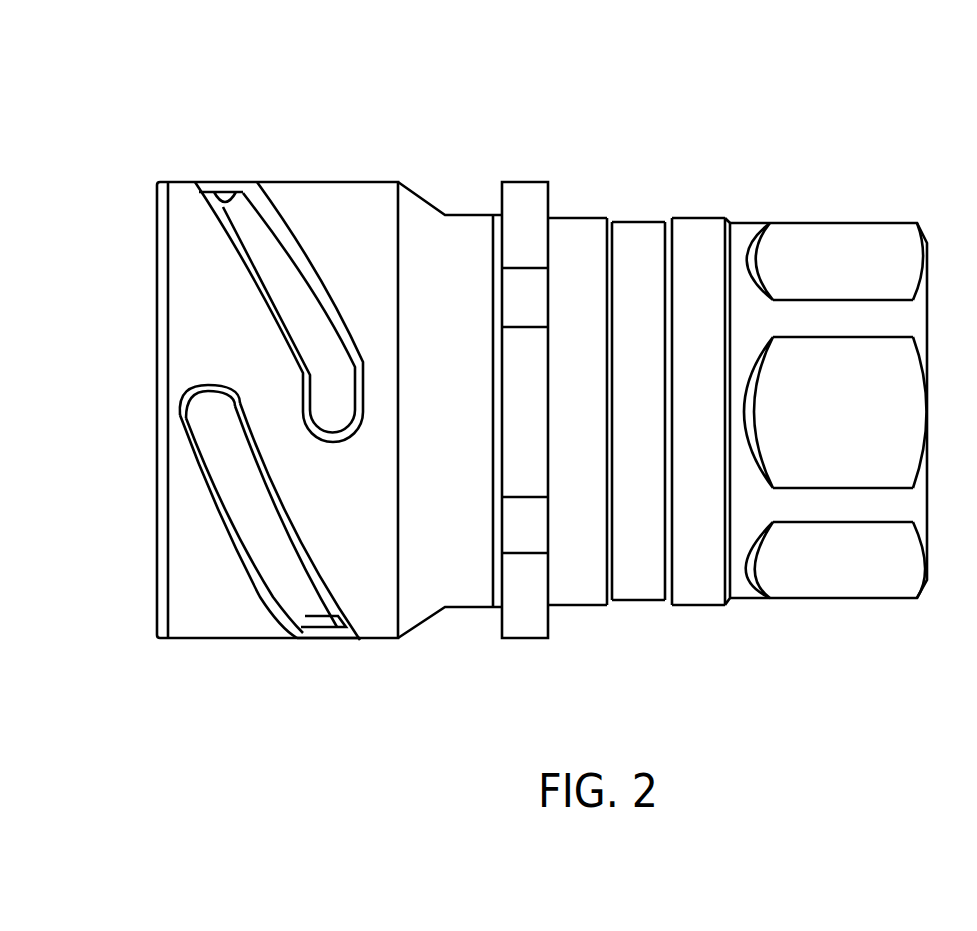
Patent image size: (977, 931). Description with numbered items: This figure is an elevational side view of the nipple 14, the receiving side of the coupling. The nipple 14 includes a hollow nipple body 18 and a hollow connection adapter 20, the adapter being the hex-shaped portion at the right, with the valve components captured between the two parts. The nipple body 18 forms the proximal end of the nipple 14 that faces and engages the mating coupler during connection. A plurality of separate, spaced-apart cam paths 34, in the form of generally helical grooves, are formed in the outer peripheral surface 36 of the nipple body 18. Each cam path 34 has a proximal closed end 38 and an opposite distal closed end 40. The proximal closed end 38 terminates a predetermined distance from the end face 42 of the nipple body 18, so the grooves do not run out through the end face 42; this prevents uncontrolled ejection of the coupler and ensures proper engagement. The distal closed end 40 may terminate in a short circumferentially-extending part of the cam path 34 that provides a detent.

The nipple 14 is at (646, 133).
The nipple body 18 is at (380, 181).
The connection adapter 20 is at (878, 222).
The cam path 34 is at (273, 233).
The outer peripheral surface 36 is at (190, 307).
The proximal closed end 38 is at (218, 190).
The distal closed end 40 is at (332, 418).
The end face 42 is at (150, 555).